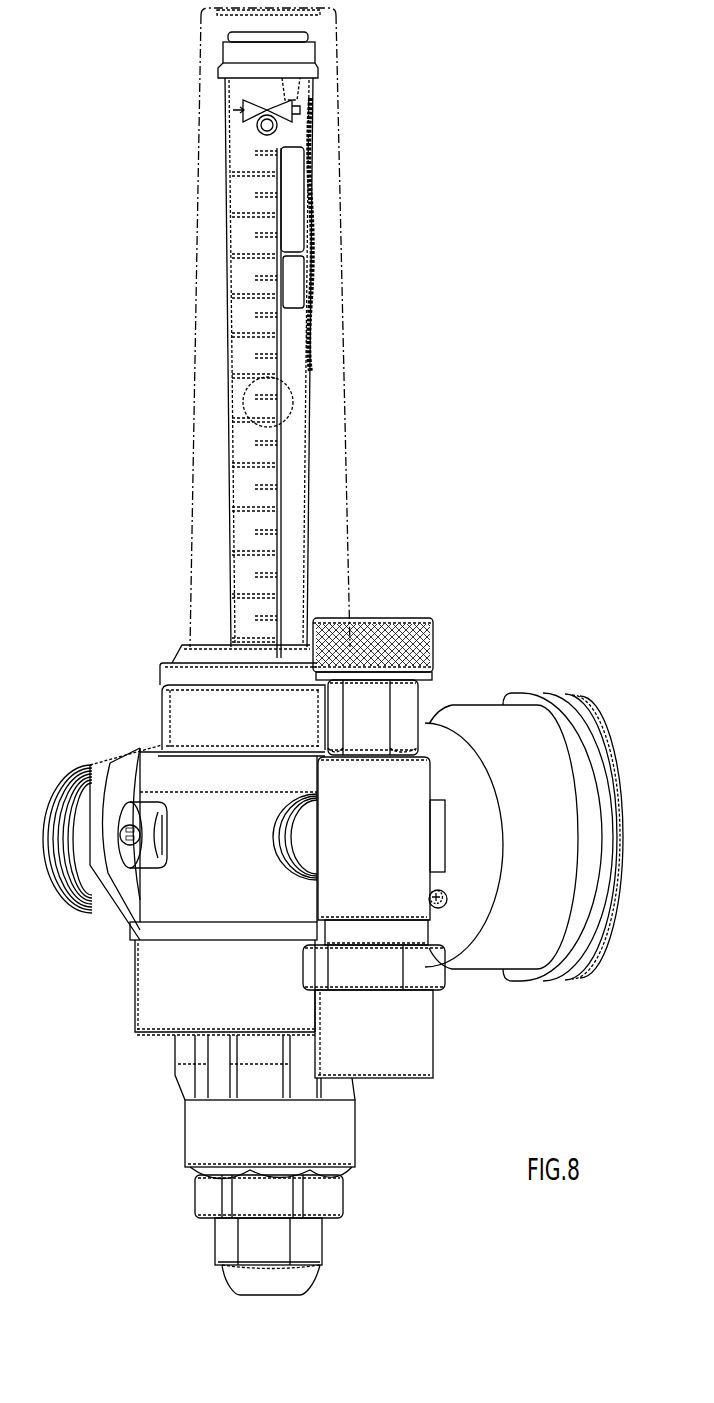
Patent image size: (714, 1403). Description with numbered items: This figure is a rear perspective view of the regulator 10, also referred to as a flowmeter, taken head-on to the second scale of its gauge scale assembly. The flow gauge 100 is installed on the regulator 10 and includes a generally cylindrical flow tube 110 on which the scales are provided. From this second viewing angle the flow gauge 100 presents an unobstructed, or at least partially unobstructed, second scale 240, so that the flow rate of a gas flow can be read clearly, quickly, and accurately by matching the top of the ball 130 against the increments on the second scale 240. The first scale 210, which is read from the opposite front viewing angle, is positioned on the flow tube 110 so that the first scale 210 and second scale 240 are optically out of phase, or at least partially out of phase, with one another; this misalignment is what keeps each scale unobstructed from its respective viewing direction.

The regulator 10 is at (523, 302).
The flow gauge 100 is at (352, 85).
The flow tube 110 is at (310, 194).
The ball 130 is at (290, 404).
The first scale 210 is at (337, 282).
The second scale 240 is at (230, 303).